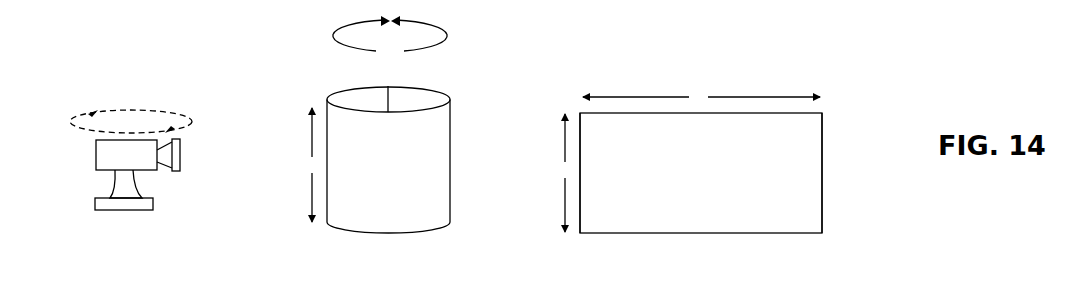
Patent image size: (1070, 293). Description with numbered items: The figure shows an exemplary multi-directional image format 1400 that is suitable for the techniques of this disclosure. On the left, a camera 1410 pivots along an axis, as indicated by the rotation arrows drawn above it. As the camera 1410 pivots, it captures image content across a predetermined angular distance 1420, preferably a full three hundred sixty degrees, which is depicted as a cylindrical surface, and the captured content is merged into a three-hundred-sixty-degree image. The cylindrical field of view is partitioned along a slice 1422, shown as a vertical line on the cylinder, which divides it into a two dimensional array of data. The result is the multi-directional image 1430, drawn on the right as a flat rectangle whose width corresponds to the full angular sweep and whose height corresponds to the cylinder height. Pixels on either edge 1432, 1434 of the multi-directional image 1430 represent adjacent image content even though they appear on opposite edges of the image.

The multi-directional image capture system 1400 is at (1015, 178).
The camera 1410 is at (112, 178).
The predetermined angular distance 1420 is at (377, 146).
The slice 1422 is at (388, 84).
The multi-directional image 1430 is at (702, 161).
The edge 1432 is at (578, 198).
The edge 1434 is at (823, 207).